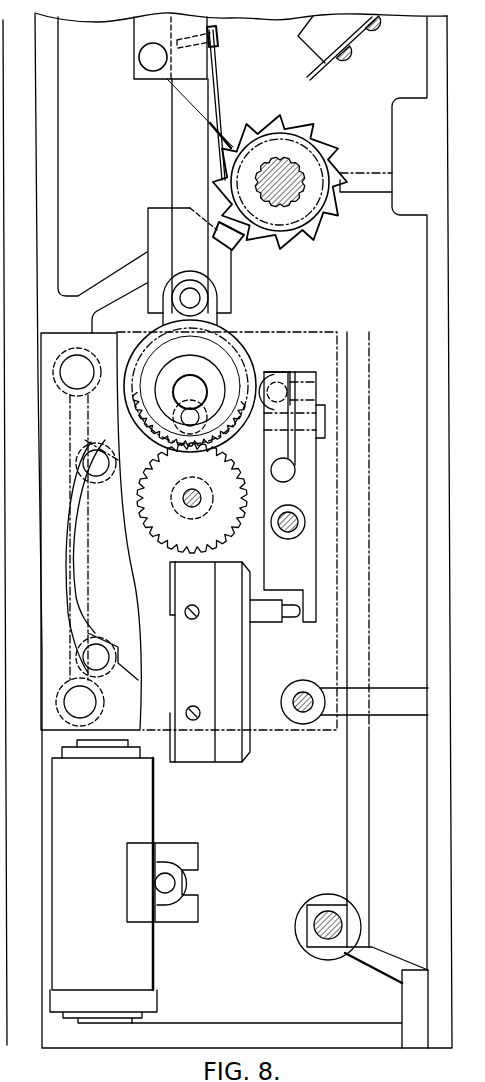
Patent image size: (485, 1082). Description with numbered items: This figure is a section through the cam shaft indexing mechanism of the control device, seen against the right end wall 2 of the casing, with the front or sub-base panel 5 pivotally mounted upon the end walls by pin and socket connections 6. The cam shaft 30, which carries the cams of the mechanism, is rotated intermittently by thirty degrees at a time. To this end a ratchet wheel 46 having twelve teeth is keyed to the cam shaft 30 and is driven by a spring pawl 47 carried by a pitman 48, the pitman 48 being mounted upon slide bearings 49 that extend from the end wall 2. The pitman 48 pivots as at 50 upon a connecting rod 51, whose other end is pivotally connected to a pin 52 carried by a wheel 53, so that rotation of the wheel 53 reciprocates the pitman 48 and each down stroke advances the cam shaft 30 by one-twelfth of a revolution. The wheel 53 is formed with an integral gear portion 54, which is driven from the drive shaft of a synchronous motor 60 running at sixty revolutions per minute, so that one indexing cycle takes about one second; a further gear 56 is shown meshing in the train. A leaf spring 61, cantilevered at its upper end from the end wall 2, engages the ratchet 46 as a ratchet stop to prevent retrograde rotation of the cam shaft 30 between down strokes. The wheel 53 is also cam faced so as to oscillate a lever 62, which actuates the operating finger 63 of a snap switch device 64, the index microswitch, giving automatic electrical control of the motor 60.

The right end wall 2 is at (2, 316).
The front or sub-base panel 5 is at (353, 815).
The pin and socket connection 6 is at (340, 918).
The cam shaft 30 is at (302, 163).
The ratchet wheel 46 is at (320, 223).
The spring pawl 47 is at (218, 92).
The pitman 48 is at (177, 157).
The slide bearing 49 is at (143, 32).
The pivot 50 is at (200, 297).
The connecting rod 51 is at (212, 320).
The pin 52 is at (182, 413).
The wheel 53 is at (248, 363).
The gear portion 54 is at (217, 450).
The gear wheel 56 is at (160, 520).
The synchronous motor 60 is at (98, 580).
The leaf spring 61 is at (310, 80).
The lever 62 is at (305, 488).
The operating finger 63 is at (290, 615).
The snap switch device 64 is at (210, 662).